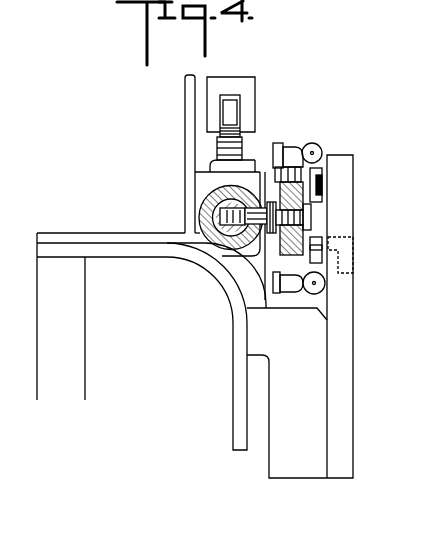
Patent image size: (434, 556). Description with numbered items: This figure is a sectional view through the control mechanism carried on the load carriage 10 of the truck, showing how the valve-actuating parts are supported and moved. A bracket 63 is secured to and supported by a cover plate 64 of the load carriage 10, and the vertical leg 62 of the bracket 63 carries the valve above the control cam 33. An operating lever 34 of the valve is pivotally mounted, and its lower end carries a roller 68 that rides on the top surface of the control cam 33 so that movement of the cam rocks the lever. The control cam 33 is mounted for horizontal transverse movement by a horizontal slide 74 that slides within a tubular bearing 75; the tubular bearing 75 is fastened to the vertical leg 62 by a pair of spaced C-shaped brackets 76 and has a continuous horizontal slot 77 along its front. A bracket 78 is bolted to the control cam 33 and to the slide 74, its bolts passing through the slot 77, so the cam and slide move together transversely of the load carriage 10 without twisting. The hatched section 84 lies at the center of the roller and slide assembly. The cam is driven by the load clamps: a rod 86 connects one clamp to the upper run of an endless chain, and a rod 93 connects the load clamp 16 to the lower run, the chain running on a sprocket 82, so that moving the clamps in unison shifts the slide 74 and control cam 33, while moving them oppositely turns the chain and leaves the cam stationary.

The load carriage 10 is at (85, 347).
The load clamp 16 is at (353, 346).
The control cam 33 is at (238, 150).
The operating lever 34 is at (246, 80).
The vertical leg 62 is at (185, 165).
The bracket 63 is at (172, 242).
The cover plate 64 is at (230, 288).
The roller 68 is at (232, 110).
The horizontal slide 74 is at (198, 250).
The tubular bearing 75 is at (218, 258).
The C-shaped bracket 76 is at (228, 266).
The horizontal slot 77 is at (226, 275).
The bracket 78 is at (256, 168).
The sprocket 82 is at (305, 186).
The roller 84 is at (256, 256).
The rod 86 is at (303, 145).
The rod 93 is at (290, 293).